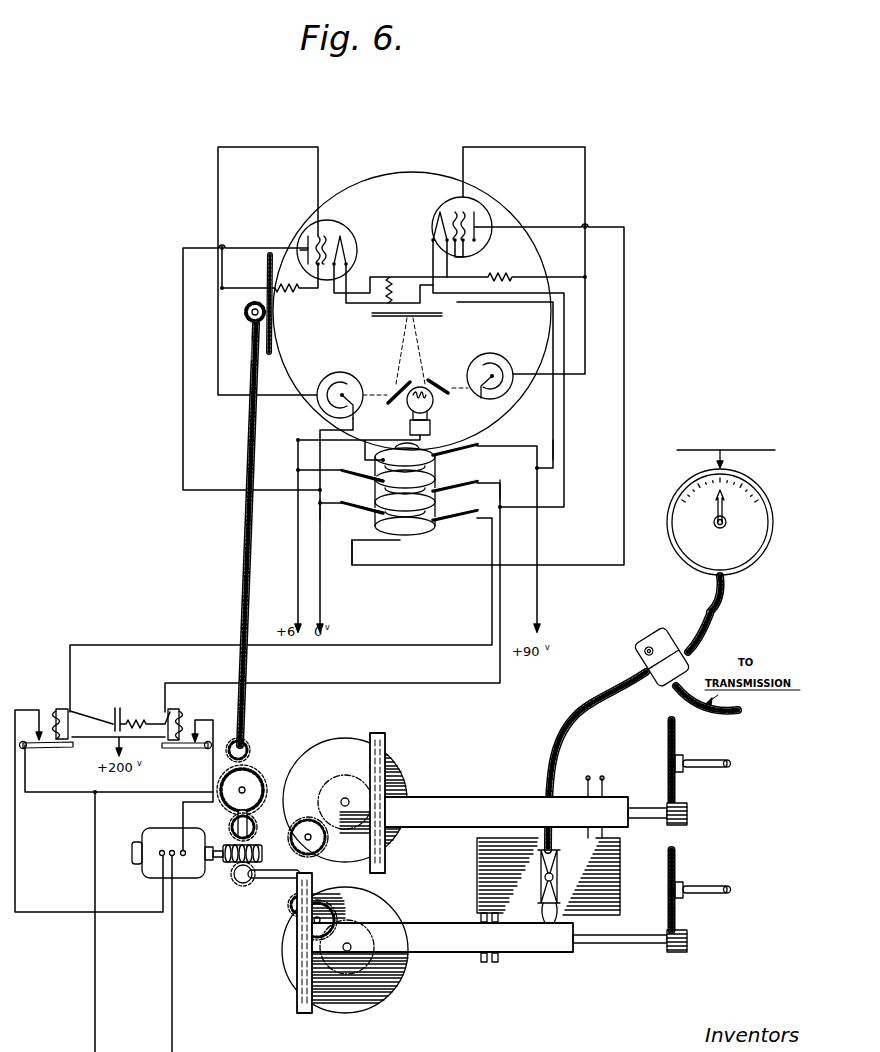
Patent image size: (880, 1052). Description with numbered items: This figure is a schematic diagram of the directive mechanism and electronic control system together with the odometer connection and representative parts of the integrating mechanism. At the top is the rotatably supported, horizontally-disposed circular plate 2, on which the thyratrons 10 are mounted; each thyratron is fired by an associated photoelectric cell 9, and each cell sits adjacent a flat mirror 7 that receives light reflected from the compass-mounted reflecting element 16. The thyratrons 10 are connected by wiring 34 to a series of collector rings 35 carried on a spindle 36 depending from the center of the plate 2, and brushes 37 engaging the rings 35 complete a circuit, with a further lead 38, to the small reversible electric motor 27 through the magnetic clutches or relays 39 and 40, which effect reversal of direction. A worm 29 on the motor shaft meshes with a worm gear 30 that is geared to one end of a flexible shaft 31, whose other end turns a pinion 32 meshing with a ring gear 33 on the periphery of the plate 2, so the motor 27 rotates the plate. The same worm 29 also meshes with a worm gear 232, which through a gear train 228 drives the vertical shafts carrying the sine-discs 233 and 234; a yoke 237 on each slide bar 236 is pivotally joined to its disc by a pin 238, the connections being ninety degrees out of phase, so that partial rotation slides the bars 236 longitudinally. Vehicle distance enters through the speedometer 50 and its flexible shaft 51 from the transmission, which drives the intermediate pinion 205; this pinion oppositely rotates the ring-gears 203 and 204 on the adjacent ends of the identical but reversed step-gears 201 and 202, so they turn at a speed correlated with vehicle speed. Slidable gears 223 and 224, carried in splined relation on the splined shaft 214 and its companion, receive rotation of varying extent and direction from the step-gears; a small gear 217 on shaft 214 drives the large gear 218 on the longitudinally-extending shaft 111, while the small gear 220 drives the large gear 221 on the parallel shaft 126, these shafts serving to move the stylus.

The circular plate 2 is at (513, 223).
The mirror 7 is at (451, 376).
The photoelectric cell 9 is at (500, 362).
The thyratron 10 is at (486, 206).
The reflecting element 16 is at (375, 317).
The small reversible electric motor 27 is at (186, 878).
The worm 29 is at (232, 863).
The worm gear 30 is at (232, 826).
The flexible shaft 31 is at (252, 715).
The pinion 32 is at (243, 318).
The ring gear 33 is at (250, 349).
The wiring 34 is at (352, 565).
The collector rings 35 is at (405, 523).
The spindle 36 is at (412, 458).
The brushes 37 is at (446, 523).
The relay lead 38 is at (317, 514).
The magnetic clutch or relay 39 is at (60, 709).
The magnetic clutch or relay 40 is at (170, 709).
The speedometer 50 is at (746, 572).
The flexible shaft 51 is at (616, 698).
The longitudinally-extending shaft 111 is at (724, 888).
The longitudinally-extending shaft 126 is at (727, 760).
The step-gear 201 is at (620, 906).
The step-gear 202 is at (530, 926).
The ring-gear 203 is at (592, 946).
The ring-gear 204 is at (544, 952).
The pinion 205 is at (552, 849).
The splined shaft 214 is at (644, 952).
The small gear 217 is at (688, 945).
The large gear 218 is at (676, 864).
The small gear 220 is at (687, 813).
The large gear 221 is at (676, 748).
The slidable gear 223 is at (488, 964).
The slidable gear 224 is at (588, 786).
The gear train 228 is at (288, 906).
The worm gear 232 is at (238, 885).
The sine-disc 233 is at (350, 1004).
The sine-disc 234 is at (340, 747).
The slide bar 236 is at (442, 956).
The yoke 237 is at (296, 994).
The pin 238 is at (361, 893).